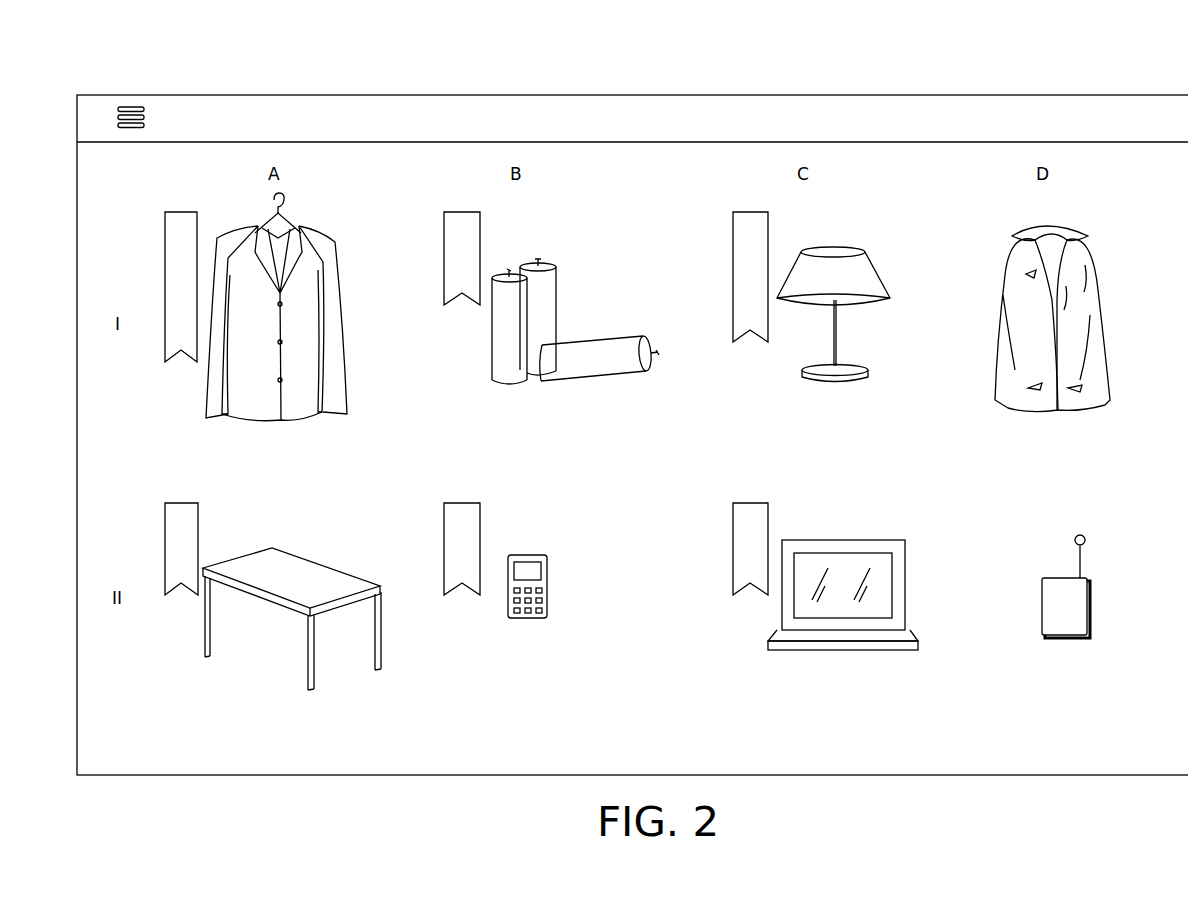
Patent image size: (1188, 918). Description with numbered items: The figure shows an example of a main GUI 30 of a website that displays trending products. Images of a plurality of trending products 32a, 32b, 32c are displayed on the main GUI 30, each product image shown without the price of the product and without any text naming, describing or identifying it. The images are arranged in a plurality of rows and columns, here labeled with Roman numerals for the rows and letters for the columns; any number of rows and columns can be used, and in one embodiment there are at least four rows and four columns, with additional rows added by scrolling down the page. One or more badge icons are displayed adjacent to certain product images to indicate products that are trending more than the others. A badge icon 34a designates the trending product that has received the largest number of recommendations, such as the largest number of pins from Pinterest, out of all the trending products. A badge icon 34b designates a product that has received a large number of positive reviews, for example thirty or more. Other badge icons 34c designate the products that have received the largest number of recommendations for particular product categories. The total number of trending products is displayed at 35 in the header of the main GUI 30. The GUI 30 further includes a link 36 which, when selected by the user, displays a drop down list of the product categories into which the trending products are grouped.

The main GUI 30 is at (73, 72).
The trending product image 32a is at (383, 383).
The trending product image 32b is at (662, 385).
The trending product image 32c is at (862, 384).
The badge icon 34a is at (181, 210).
The badge icon 34b is at (751, 210).
The badge icon 34c is at (462, 210).
The total number of trending products 35 is at (358, 137).
The link 36 is at (127, 104).